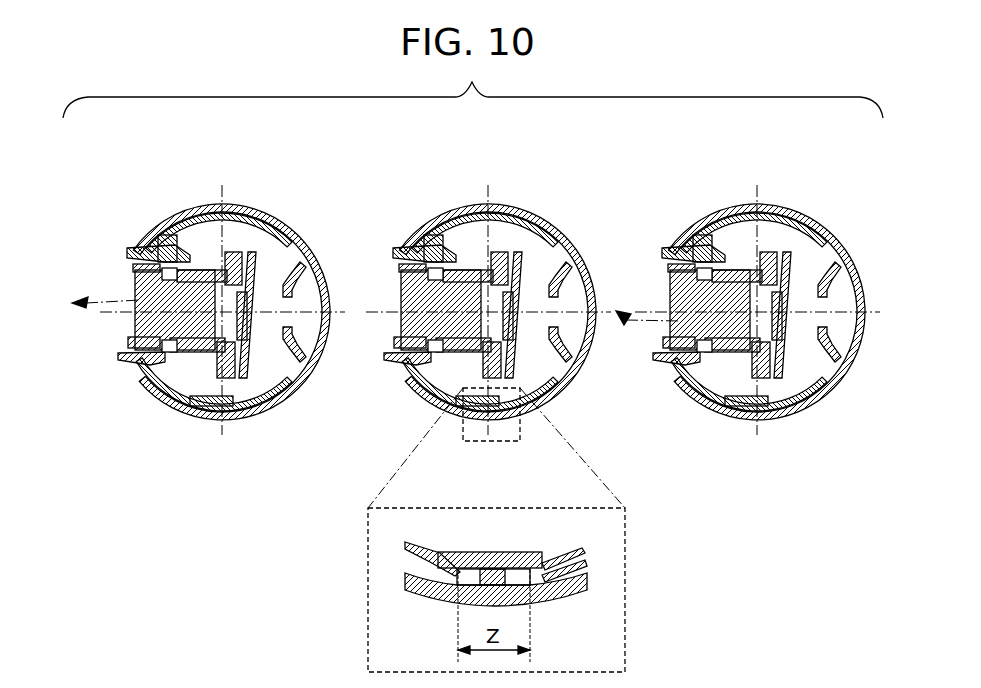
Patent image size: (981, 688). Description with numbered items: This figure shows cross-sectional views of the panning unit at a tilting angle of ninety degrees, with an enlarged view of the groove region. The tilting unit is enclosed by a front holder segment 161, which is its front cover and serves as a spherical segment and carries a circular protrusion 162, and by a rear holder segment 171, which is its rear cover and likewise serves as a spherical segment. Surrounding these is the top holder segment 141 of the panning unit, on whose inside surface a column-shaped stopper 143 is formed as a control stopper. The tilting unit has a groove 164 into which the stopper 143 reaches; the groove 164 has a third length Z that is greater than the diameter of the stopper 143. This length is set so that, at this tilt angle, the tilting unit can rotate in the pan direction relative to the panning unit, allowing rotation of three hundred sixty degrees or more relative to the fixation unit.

The top holder segment 141 is at (243, 210).
The front holder segment 161 is at (195, 223).
The rear holder segment 171 is at (288, 238).
The circular protrusion 162 is at (128, 362).
The stopper 143 is at (455, 574).
The groove 164 is at (582, 563).